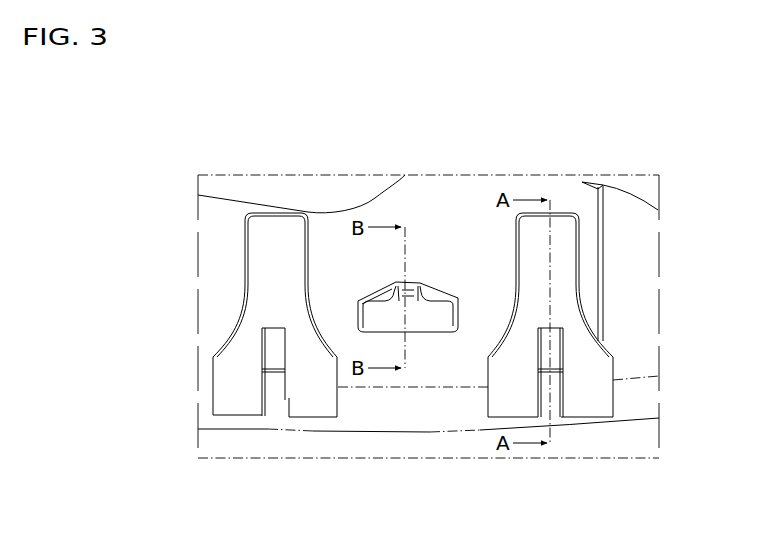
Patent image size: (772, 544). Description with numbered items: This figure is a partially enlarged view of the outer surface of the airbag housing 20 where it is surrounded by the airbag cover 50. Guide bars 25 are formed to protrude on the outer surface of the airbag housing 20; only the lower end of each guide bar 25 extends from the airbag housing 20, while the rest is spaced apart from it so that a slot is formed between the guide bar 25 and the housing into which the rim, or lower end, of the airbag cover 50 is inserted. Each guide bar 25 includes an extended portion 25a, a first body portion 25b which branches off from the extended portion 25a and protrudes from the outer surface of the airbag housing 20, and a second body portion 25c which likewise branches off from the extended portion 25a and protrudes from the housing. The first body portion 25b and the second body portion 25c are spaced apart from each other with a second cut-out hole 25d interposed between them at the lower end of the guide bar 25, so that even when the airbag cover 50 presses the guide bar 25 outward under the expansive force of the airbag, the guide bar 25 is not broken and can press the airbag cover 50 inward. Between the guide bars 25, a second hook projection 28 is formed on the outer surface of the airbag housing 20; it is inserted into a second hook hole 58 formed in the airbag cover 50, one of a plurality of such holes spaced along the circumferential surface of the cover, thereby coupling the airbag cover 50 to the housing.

The airbag housing 20 is at (457, 413).
The guide bar 25 is at (565, 259).
The extended portion 25a is at (265, 284).
The first body portion 25b is at (232, 370).
The second body portion 25c is at (302, 395).
The second cut-out hole 25d is at (273, 393).
The second hook projection 28 is at (417, 310).
The airbag cover 50 is at (424, 368).
The second hook hole 58 is at (434, 297).